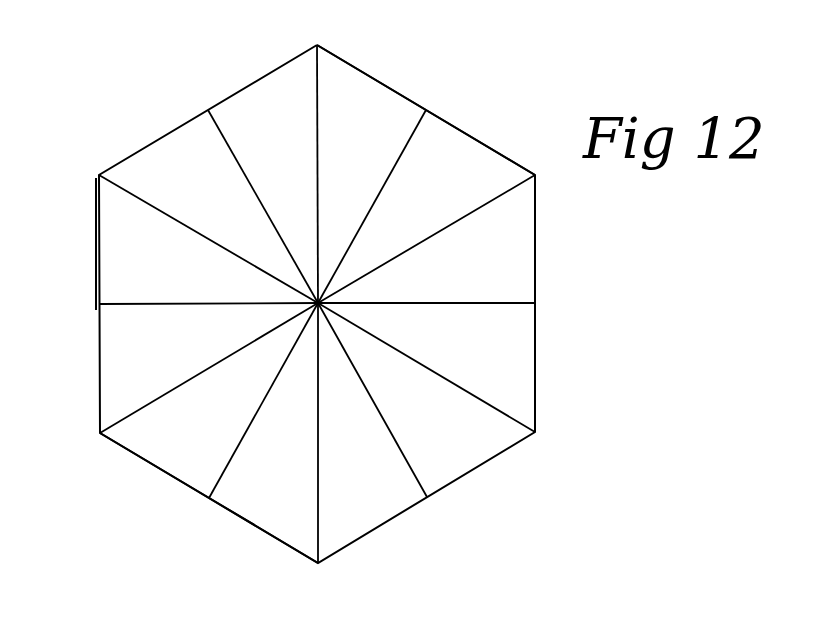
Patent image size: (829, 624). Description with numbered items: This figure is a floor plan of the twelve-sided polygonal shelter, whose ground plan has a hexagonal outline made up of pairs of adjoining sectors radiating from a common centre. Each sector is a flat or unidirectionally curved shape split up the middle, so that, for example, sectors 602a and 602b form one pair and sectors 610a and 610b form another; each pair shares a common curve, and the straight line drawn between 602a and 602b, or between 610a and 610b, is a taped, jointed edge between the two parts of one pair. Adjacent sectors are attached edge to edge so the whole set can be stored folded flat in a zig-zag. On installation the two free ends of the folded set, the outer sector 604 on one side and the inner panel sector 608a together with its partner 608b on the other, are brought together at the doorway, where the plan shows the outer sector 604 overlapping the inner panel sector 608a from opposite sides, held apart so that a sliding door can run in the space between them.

The sector 602a is at (162, 440).
The sector 602b is at (250, 492).
The outer sector 604 is at (96, 280).
The inner panel sector 608a is at (106, 206).
The sector 608b is at (110, 347).
The sector 610a is at (463, 164).
The sector 610b is at (370, 98).